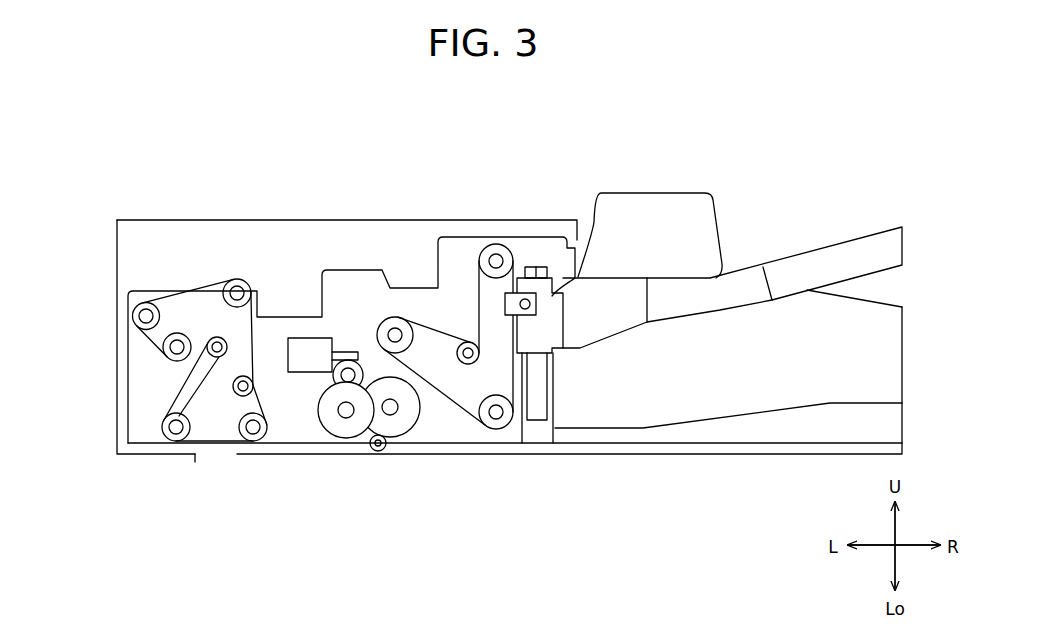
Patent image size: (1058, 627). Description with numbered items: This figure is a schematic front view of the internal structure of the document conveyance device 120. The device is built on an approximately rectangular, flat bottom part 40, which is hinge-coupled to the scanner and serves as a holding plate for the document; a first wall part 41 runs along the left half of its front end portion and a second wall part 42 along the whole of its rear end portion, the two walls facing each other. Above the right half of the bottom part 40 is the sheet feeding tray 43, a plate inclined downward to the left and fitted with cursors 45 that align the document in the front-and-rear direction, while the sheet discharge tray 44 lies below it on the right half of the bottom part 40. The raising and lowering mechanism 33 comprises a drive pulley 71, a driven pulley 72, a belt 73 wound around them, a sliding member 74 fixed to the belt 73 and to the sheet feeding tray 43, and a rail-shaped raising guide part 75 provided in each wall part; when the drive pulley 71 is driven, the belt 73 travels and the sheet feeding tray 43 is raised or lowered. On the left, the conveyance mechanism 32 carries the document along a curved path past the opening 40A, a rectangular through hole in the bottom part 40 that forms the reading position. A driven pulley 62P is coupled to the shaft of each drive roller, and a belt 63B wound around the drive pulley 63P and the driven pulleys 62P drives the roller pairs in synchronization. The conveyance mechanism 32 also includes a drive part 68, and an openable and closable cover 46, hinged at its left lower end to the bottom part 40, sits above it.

The document conveyance device 120 is at (893, 123).
The conveyance mechanism 32 is at (185, 272).
The raising and lowering mechanism 33 is at (465, 257).
The bottom part 40 is at (463, 453).
The opening 40A is at (193, 455).
The first wall part 41 is at (348, 267).
The second wall part 42 is at (895, 302).
The sheet feeding tray 43 is at (813, 247).
The sheet discharge tray 44 is at (790, 408).
The cursors 45 is at (662, 192).
The cover 46 is at (267, 218).
The driven pulley 62P is at (240, 280).
The drive pulley 63P is at (137, 313).
The belt 63B is at (182, 393).
The drive part 68 is at (310, 428).
The drive pulley 71 is at (393, 318).
The driven pulley 72 is at (493, 250).
The belt 73 is at (453, 405).
The sliding member 74 is at (530, 265).
The raising guide part 75 is at (537, 422).